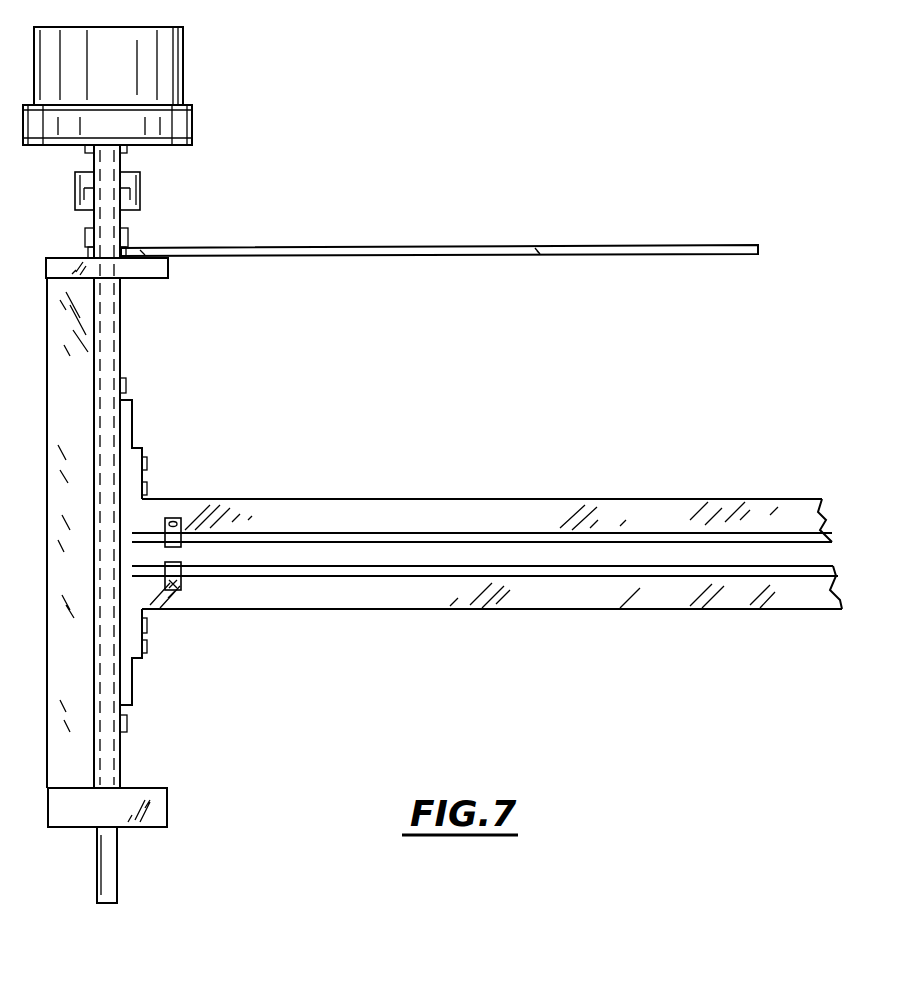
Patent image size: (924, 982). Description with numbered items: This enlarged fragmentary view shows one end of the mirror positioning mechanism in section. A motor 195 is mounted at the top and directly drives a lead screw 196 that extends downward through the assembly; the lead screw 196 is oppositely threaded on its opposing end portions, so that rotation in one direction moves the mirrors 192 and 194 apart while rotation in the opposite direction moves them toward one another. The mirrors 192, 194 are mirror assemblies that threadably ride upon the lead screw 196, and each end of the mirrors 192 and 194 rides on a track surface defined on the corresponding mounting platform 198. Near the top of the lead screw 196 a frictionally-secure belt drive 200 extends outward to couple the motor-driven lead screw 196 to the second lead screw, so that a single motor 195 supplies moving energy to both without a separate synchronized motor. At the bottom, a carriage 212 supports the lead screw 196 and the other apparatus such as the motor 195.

The mirror 192 is at (443, 560).
The mirror 194 is at (472, 543).
The motor 195 is at (183, 72).
The lead screw 196 is at (115, 310).
The mounting platform 198 is at (132, 425).
The belt drive 200 is at (512, 213).
The carriage 212 is at (167, 807).